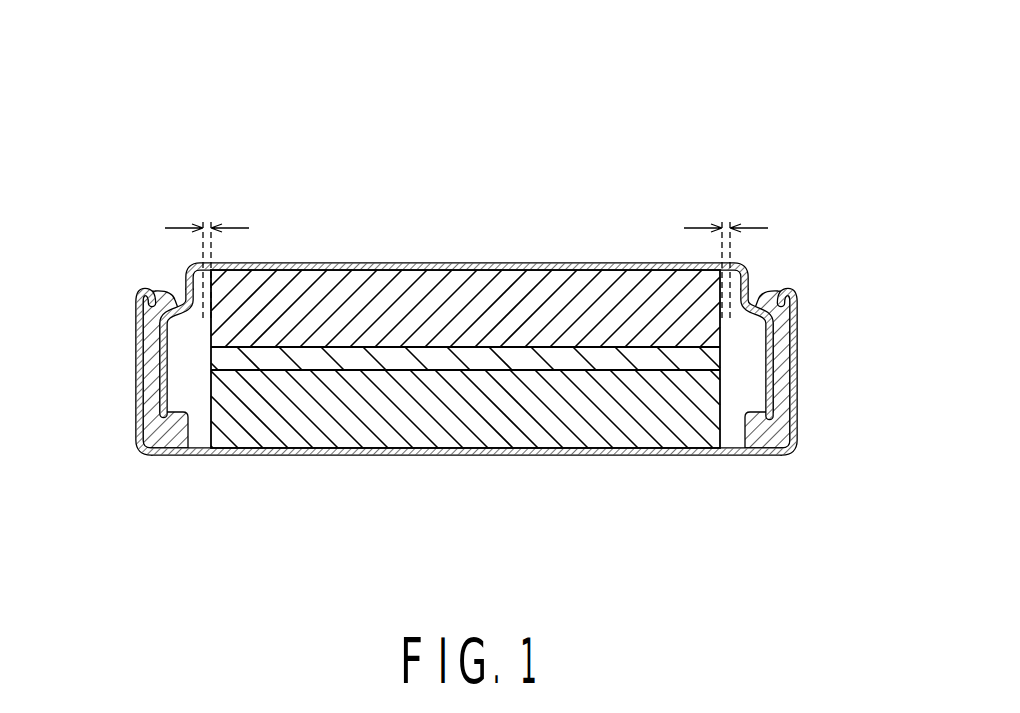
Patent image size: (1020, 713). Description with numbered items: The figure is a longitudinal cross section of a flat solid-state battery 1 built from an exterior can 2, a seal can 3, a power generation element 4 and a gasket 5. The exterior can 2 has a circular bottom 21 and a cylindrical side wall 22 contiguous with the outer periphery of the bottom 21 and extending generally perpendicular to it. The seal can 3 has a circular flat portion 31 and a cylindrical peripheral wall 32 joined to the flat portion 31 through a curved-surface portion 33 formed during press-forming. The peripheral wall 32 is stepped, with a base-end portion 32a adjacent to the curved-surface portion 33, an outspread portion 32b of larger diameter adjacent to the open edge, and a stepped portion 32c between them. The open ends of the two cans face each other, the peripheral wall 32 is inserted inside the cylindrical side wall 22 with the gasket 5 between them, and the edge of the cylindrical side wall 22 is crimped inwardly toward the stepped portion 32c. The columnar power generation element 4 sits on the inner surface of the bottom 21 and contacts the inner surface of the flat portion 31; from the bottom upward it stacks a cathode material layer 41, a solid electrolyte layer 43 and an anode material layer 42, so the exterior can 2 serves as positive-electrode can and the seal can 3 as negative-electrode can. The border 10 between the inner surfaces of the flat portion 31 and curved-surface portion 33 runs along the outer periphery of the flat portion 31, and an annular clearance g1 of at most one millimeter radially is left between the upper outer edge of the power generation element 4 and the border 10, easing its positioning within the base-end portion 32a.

The solid-state battery 1 is at (151, 154).
The exterior can 2 is at (422, 448).
The bottom 21 is at (537, 457).
The cylindrical side wall 22 is at (141, 343).
The seal can 3 is at (517, 257).
The flat portion 31 is at (422, 263).
The curved-surface portion 33 is at (760, 265).
The peripheral wall 32 is at (504, 368).
The base-end portion 32a is at (763, 291).
The outspread portion 32b is at (768, 371).
The stepped portion 32c is at (767, 318).
The power generation element 4 is at (465, 441).
The cathode material layer 41 is at (423, 417).
The anode material layer 42 is at (348, 310).
The solid electrolyte layer 43 is at (392, 360).
The gasket 5 is at (148, 300).
The border 10 is at (465, 373).
The clearance g1 is at (466, 254).